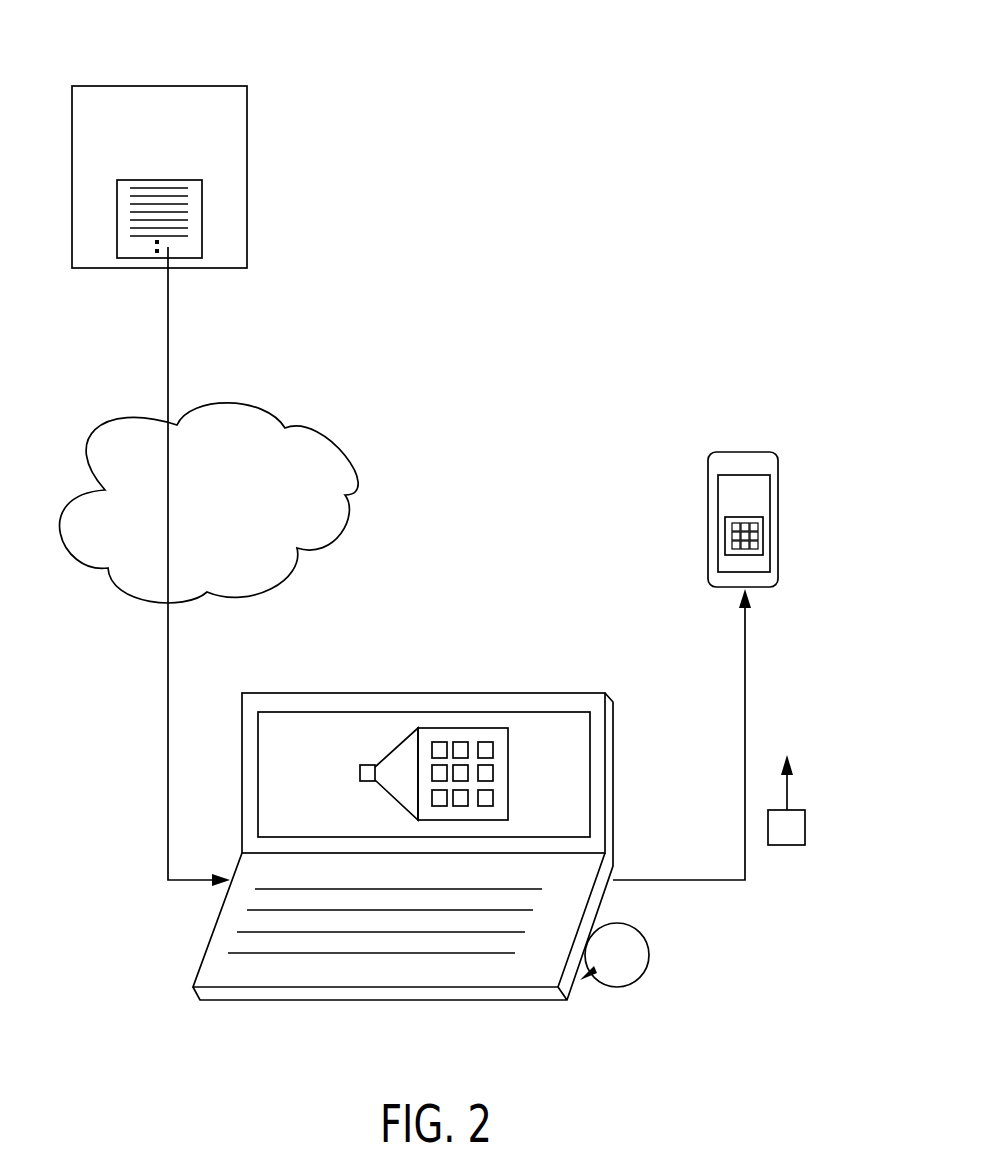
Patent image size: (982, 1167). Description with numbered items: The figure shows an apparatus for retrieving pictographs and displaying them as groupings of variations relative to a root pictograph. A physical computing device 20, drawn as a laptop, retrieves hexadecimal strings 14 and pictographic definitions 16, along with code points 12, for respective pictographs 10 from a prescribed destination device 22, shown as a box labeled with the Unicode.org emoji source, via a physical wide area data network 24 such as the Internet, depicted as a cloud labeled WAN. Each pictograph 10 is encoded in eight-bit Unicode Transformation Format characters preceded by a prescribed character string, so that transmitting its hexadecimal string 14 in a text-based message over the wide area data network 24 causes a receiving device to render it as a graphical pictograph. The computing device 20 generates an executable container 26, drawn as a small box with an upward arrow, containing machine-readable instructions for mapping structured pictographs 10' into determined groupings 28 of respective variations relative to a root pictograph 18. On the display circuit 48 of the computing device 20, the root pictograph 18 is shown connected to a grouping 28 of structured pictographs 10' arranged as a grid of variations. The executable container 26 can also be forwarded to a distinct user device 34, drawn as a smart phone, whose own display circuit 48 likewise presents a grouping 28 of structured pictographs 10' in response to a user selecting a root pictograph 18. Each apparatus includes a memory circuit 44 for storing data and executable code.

The prescribed destination device 22 is at (175, 66).
The pictograph 10 is at (244, 226).
The code point 12 is at (244, 226).
The hexadecimal string 14 is at (244, 226).
The pictographic definition 16 is at (190, 218).
The wide area data network 24 is at (368, 465).
The computing device 20 is at (247, 972).
The display circuit 48 is at (312, 735).
The root pictograph 18 is at (360, 777).
The grouping 28 is at (472, 728).
The structured pictograph 10' is at (627, 660).
The user device 34 is at (745, 462).
The executable container 26 is at (783, 837).
The memory circuit 44 is at (648, 955).